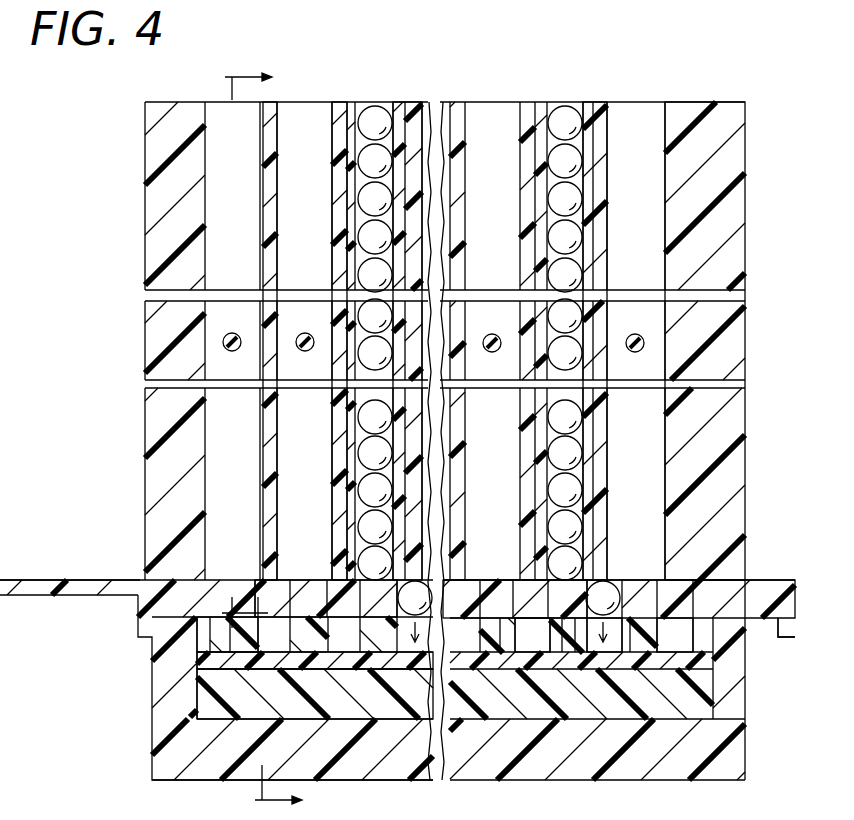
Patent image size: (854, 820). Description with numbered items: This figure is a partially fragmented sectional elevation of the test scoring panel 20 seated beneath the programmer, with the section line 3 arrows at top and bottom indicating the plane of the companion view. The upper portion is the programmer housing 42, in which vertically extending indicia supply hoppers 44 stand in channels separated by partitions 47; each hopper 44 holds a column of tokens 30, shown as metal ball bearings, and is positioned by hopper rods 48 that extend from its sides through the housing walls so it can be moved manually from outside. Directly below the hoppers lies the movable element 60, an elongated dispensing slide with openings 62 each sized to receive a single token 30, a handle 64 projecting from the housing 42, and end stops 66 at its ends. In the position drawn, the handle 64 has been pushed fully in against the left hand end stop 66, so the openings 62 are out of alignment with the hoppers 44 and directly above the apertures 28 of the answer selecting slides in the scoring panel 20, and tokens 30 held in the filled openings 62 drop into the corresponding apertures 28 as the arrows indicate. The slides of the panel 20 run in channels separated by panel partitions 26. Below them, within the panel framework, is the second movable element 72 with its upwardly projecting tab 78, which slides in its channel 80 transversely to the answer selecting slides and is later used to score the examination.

The section line 3- 3 is at (275, 441).
The test scoring panel 20 is at (415, 706).
The panel partitions 26 is at (548, 655).
The apertures 28 is at (672, 655).
The token 30 is at (568, 195).
The housing 42 is at (722, 231).
The indicia supply hoppers 44 is at (588, 108).
The partitions 47 is at (337, 112).
The hopper rods 48 is at (498, 340).
The movable element 60 is at (770, 582).
The openings 62 is at (525, 590).
The handle 64 is at (60, 580).
The end stops 66 is at (795, 637).
The second movable element 72 is at (597, 652).
The tab 78 is at (212, 647).
The channel 80 is at (252, 669).